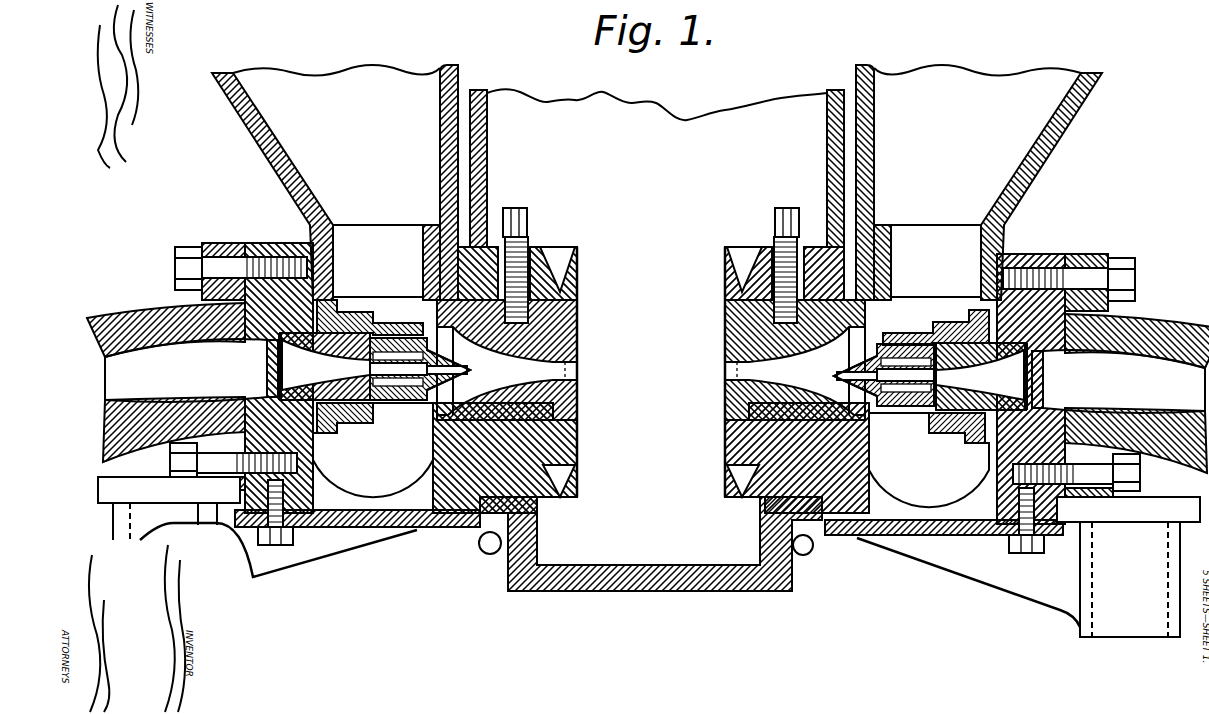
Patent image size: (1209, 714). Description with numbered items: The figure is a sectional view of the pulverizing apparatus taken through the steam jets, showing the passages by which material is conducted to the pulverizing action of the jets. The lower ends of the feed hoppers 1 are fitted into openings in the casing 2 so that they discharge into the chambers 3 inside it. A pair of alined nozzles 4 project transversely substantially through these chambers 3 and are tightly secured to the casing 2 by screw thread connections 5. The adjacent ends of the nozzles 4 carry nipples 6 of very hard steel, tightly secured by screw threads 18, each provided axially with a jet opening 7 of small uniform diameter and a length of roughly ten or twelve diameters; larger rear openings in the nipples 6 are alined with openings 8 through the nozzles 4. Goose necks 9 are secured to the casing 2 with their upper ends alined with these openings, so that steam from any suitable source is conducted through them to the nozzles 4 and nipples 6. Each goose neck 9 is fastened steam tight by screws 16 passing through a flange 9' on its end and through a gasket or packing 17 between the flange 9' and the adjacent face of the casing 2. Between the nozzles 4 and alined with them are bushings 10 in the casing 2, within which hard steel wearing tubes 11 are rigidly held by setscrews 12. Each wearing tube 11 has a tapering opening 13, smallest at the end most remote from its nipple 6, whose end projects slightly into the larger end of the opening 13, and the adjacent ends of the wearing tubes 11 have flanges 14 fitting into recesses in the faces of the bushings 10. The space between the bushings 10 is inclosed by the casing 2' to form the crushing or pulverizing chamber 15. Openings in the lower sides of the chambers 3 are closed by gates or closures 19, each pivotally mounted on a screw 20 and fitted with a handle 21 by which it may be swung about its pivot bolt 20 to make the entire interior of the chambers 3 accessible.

The feed hopper 1 is at (657, 182).
The casing 2 is at (652, 398).
The casing 2' is at (657, 358).
The chamber 3 is at (651, 455).
The nozzle 4 is at (375, 316).
The screw thread connection 5 is at (653, 370).
The nipple 6 is at (468, 368).
The jet opening 7 is at (652, 375).
The opening 8 is at (653, 371).
The goose neck 9 is at (648, 374).
The flange 9' is at (653, 350).
The bushing 10 is at (578, 257).
The wearing tube 11 is at (535, 343).
The setscrew 12 is at (528, 225).
The tapering opening 13 is at (577, 371).
The flange 14 is at (577, 290).
The pulverizing chamber 15 is at (620, 530).
The screw 16 is at (175, 266).
The gasket 17 is at (218, 343).
The screw thread 18 is at (387, 405).
The gate 19 is at (360, 530).
The screw 20 is at (277, 548).
The handle 21 is at (486, 552).